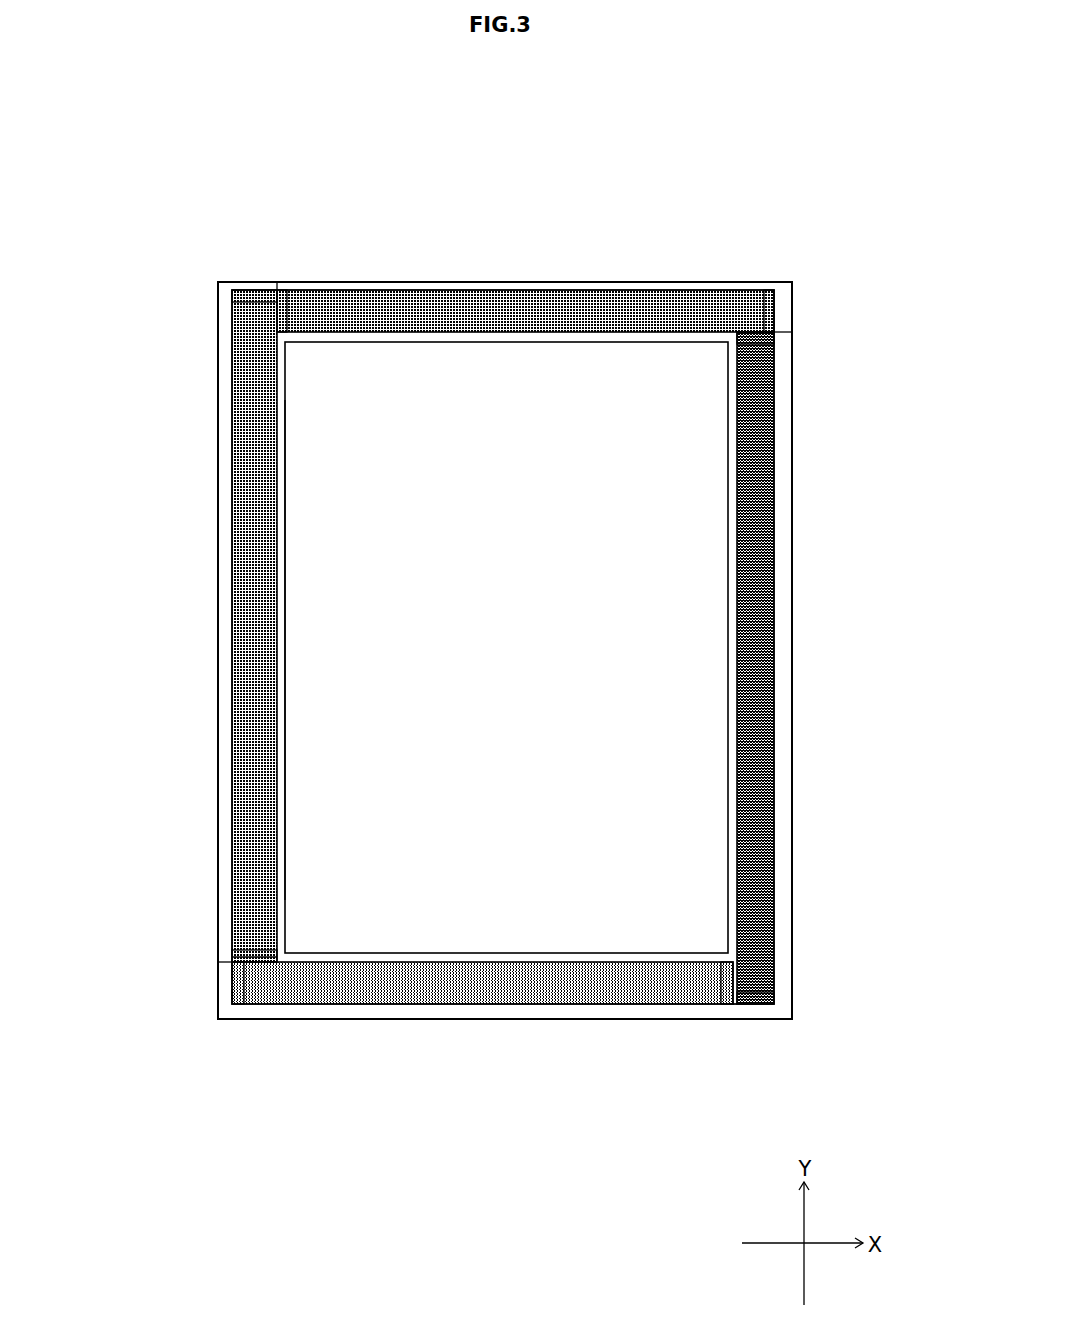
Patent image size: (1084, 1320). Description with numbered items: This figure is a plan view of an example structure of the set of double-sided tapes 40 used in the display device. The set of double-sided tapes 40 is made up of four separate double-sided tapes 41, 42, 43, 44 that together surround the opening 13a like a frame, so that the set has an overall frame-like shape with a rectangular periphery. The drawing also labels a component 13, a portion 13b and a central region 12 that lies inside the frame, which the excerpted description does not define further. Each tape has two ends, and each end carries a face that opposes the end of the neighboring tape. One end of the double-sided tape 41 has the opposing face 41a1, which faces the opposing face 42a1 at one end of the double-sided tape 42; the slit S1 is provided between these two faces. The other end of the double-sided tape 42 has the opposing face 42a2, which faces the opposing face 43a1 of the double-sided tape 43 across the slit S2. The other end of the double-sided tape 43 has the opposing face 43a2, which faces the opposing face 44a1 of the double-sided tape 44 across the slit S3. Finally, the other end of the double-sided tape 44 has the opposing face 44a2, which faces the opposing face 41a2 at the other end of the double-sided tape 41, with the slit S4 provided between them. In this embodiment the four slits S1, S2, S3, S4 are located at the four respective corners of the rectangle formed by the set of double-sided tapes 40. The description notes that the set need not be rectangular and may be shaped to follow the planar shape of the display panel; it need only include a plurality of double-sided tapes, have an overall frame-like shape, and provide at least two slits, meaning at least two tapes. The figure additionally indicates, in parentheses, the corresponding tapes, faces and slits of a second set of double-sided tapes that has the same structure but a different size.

The light guide plate (31) 13 is at (243, 283).
The opening 13a is at (299, 518).
The side surface (31b) 13b is at (437, 282).
The display region (21) 12 is at (695, 681).
The set of double-sided tapes 40 is at (568, 283).
The double-sided tape 41 is at (668, 290).
The opposing face 41a1 is at (765, 290).
The opposing face 41a2 is at (283, 313).
The double-sided tape 42 is at (775, 497).
The opposing face 42a1 is at (775, 362).
The opposing face 42a2 is at (775, 983).
The double-sided tape 43 is at (480, 983).
The opposing face 43a1 is at (730, 983).
The opposing face 43a2 is at (252, 966).
The double-sided tape 44 is at (253, 677).
The opposing face 44a1 is at (258, 955).
The opposing face 44a2 is at (262, 310).
The slit S1 is at (781, 338).
The slit S2 is at (740, 1007).
The slit S3 is at (218, 963).
The slit S4 is at (276, 280).